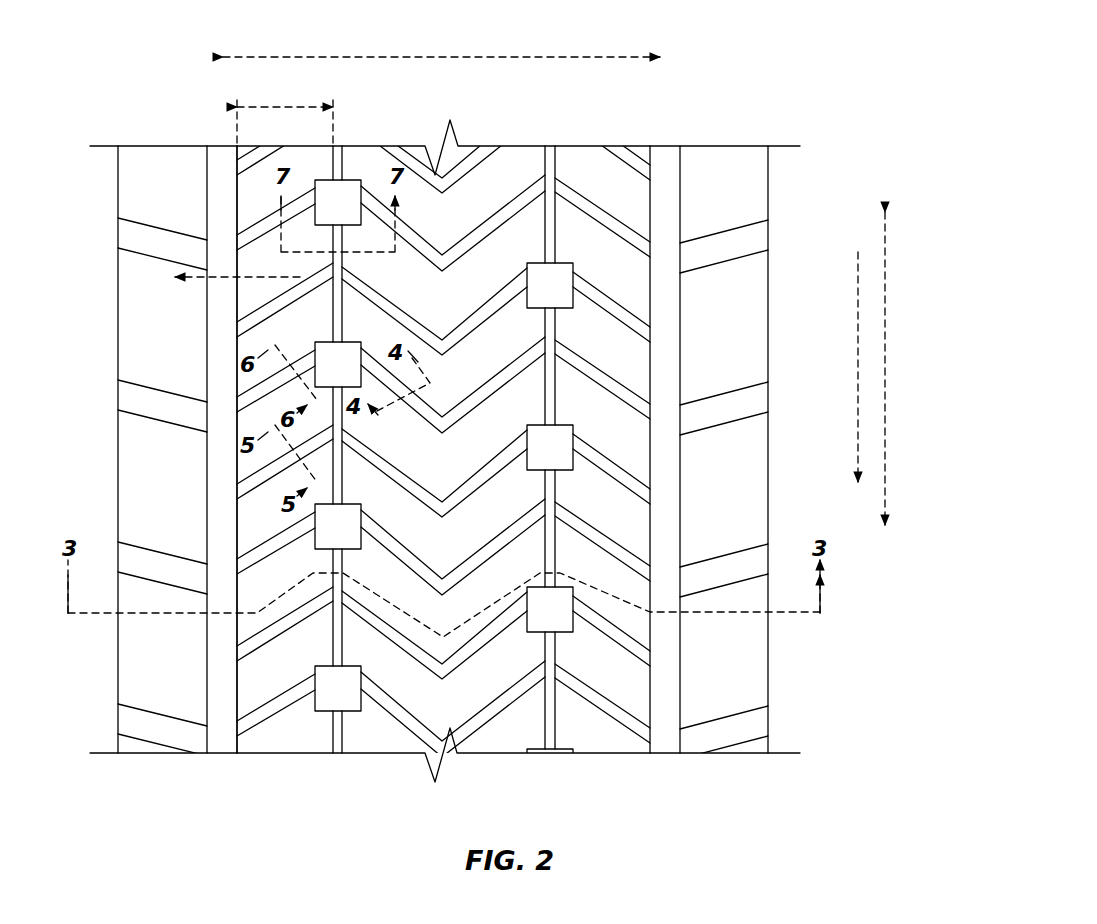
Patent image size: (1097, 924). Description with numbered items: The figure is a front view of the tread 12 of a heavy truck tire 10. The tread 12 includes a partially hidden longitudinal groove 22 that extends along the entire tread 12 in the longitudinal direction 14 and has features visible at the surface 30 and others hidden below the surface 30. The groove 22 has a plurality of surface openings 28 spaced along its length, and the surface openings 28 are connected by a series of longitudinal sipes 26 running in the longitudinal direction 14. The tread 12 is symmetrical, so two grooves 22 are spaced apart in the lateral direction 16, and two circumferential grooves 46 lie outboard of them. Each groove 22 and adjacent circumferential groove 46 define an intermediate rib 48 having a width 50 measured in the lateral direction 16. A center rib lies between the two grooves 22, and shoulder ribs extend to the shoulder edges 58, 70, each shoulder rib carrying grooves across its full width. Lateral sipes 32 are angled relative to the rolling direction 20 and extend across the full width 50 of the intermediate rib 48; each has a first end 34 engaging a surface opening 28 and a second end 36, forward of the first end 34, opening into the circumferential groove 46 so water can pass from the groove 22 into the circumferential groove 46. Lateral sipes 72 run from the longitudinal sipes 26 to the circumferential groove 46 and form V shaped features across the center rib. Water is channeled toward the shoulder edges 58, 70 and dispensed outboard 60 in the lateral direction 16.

The tire 10 is at (805, 44).
The tread 12 is at (770, 330).
The longitudinal direction 14 is at (885, 367).
The lateral direction 16 is at (443, 57).
The rolling direction 20 is at (858, 305).
The partially hidden longitudinal groove 22 is at (322, 735).
The longitudinal sipe 26 is at (345, 562).
The surface opening 28 is at (338, 352).
The surface 30 is at (717, 170).
The lateral sipe 32 is at (260, 222).
The first end 34 is at (310, 180).
The second end 36 is at (237, 248).
The circumferential groove 46 is at (210, 702).
The intermediate rib 48 is at (283, 728).
The width 50 is at (288, 107).
The shoulder edge 58 is at (118, 335).
The outboard 60 is at (230, 282).
The shoulder edge 70 is at (770, 235).
The lateral sipe 72 is at (420, 400).